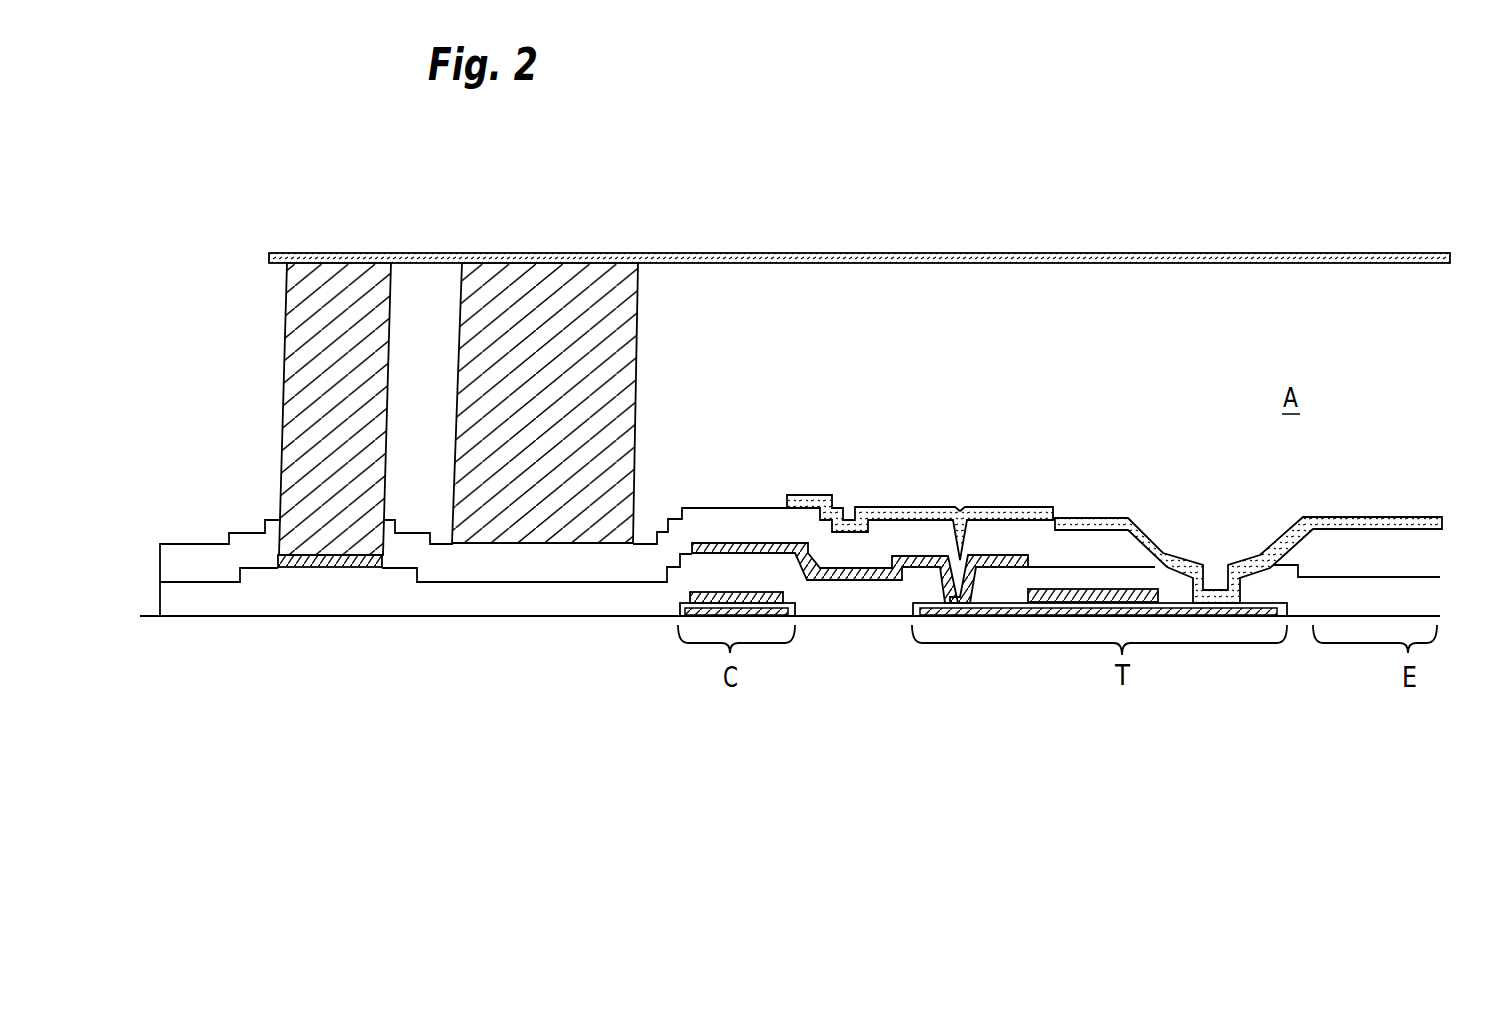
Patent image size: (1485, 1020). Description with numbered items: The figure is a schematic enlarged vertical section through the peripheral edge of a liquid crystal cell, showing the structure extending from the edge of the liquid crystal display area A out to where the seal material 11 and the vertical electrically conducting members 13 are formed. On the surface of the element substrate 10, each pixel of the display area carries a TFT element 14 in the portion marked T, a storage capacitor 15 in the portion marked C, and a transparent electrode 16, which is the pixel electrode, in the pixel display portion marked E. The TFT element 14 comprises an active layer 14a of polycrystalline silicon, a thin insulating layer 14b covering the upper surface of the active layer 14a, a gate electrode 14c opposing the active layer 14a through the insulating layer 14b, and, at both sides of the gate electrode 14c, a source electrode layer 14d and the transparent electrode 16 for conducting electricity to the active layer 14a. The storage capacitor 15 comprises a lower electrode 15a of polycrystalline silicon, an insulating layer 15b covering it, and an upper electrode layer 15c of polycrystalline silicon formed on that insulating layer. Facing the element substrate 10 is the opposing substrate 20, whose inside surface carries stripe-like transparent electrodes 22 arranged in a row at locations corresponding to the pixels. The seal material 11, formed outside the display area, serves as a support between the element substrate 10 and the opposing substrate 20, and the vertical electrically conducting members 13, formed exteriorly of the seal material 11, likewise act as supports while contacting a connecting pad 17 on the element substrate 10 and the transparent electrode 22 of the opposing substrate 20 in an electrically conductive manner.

The element substrate 10 is at (848, 724).
The seal material 11 is at (637, 392).
The vertical electrically conducting members 13 is at (283, 377).
The TFT element 14 is at (1141, 571).
The active layer 14a is at (1232, 615).
The insulating layer 14b is at (1055, 615).
The gate electrode 14c is at (1113, 588).
The source electrode layer 14d is at (1003, 555).
The storage capacitor 15 is at (784, 568).
The lower electrode 15a is at (695, 617).
The insulating layer 15b is at (796, 605).
The upper electrode layer 15c is at (735, 592).
The transparent electrode 16 is at (1402, 517).
The connecting pad 17 is at (342, 568).
The opposing substrate 20 is at (982, 136).
The transparent electrodes 22 is at (1062, 264).